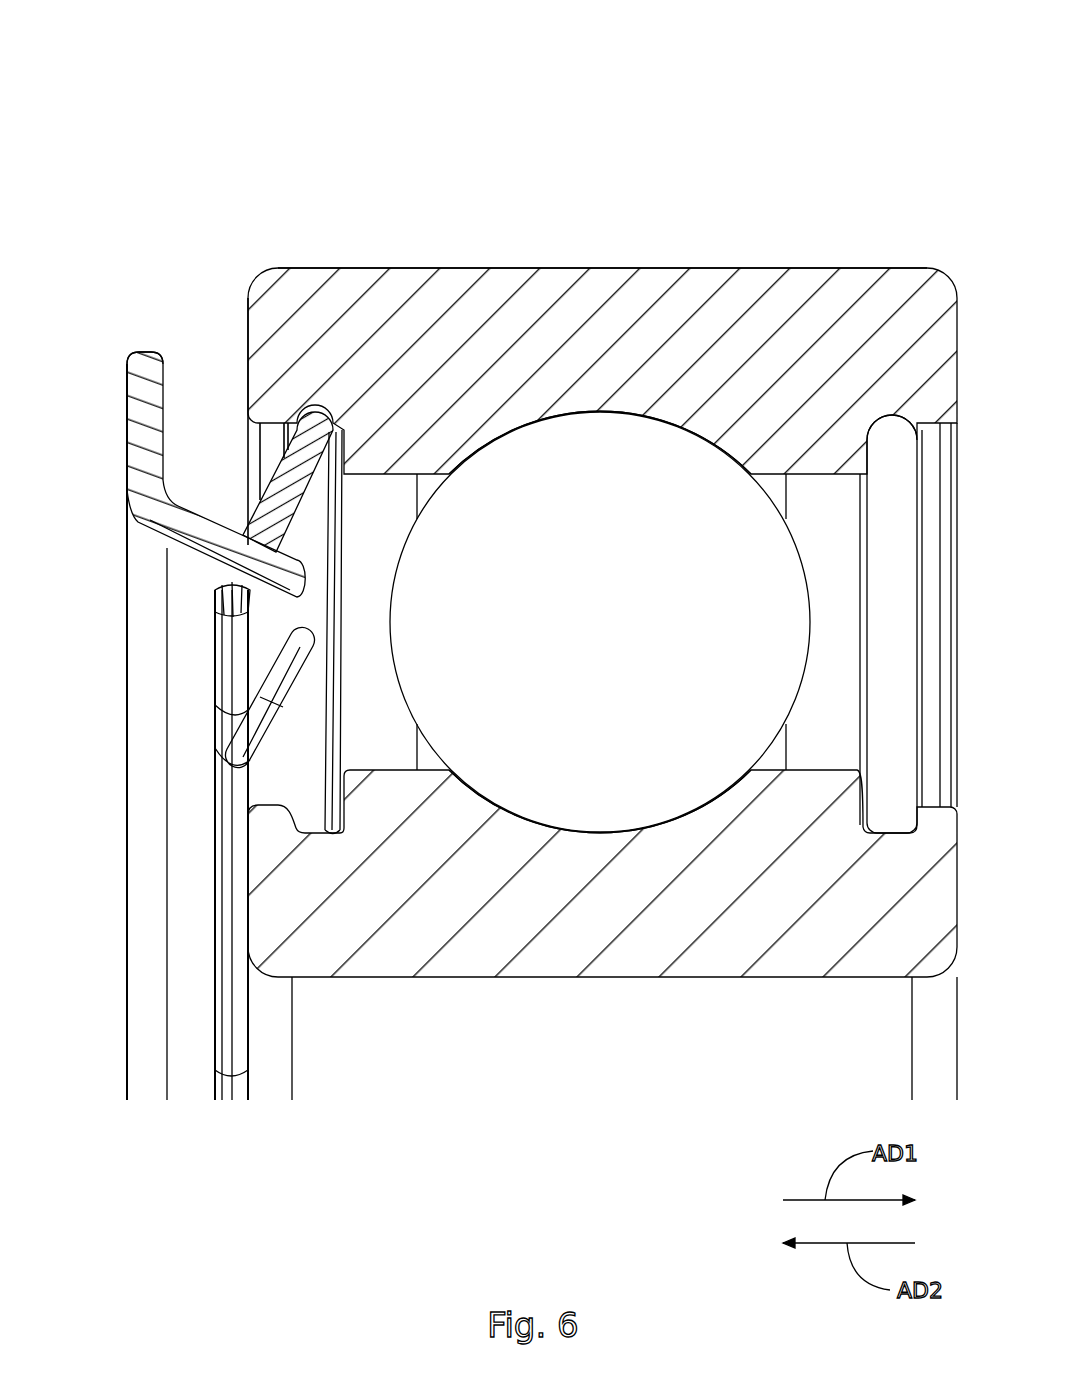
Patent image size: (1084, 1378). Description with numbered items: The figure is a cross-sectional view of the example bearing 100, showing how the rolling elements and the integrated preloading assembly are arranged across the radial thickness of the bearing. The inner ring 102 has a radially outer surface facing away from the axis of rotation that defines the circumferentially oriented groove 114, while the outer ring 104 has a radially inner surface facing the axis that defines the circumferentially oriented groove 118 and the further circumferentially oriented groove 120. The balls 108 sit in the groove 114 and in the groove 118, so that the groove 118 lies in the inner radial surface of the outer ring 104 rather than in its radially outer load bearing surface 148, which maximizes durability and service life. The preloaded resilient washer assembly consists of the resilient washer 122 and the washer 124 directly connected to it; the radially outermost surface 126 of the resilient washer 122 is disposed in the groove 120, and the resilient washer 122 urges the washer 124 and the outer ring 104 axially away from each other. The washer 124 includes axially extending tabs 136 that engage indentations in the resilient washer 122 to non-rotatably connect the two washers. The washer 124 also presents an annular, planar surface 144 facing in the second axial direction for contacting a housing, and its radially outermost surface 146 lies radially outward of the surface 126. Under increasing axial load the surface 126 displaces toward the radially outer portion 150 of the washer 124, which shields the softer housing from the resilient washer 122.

The bearing 100 is at (604, 554).
The inner ring 102 is at (602, 935).
The outer ring 104 is at (604, 335).
The balls 108 is at (630, 440).
The circumferentially oriented groove 114 is at (533, 813).
The circumferentially oriented groove 118 is at (462, 455).
The circumferentially oriented groove 120 is at (314, 493).
The resilient washer 122 is at (258, 478).
The washer 124 is at (130, 550).
The radially outermost surface 126 is at (320, 415).
The axially extending tabs 136 is at (255, 612).
The annular surface 144 is at (171, 407).
The radially outermost surface 146 is at (145, 352).
The radially outer load bearing surface 148 is at (777, 268).
The radially outer portion 150 is at (122, 432).